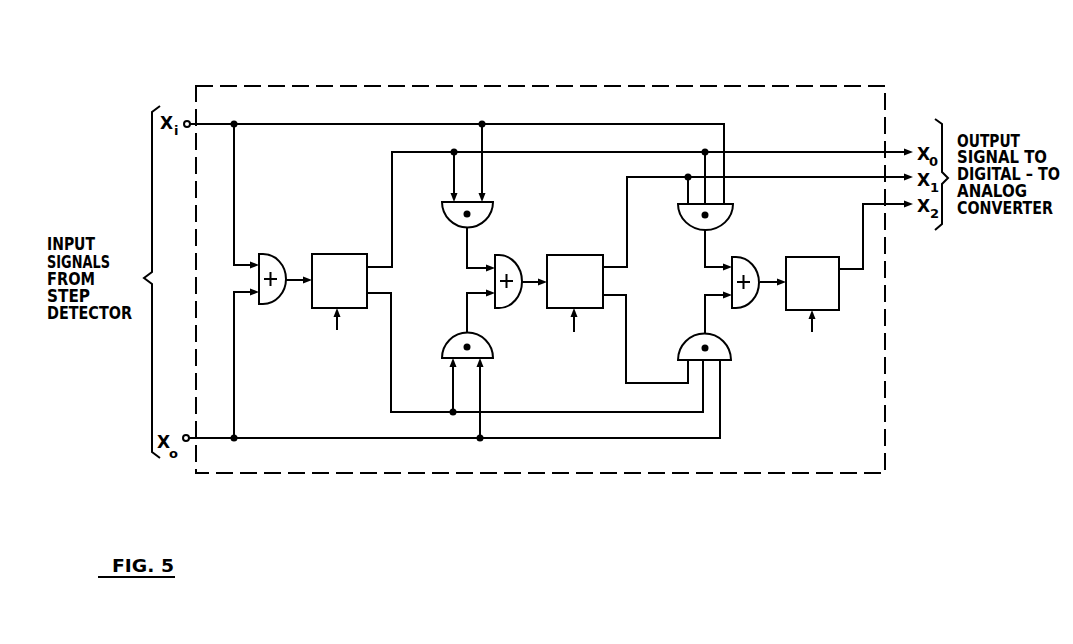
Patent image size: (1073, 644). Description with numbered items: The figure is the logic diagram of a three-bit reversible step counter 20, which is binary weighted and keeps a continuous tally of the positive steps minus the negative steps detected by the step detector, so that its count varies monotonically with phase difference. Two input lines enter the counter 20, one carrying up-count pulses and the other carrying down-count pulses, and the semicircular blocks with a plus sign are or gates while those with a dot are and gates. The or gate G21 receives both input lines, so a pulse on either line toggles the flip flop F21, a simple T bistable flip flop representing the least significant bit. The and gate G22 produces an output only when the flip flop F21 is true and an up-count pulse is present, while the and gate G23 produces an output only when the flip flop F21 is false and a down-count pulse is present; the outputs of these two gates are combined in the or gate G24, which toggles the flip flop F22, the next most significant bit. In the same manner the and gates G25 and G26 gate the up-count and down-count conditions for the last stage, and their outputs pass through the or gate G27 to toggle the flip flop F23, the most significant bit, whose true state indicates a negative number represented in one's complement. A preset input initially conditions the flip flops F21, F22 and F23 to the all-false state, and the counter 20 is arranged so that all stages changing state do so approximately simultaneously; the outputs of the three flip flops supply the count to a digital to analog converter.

The reversible step counter 20 is at (480, 509).
The or gate G21 is at (285, 267).
The flip flop F21 is at (612, 282).
The and gate G22 is at (477, 210).
The and gate G23 is at (476, 324).
The or gate G24 is at (521, 273).
The flip flop F22 is at (730, 279).
The and gate G25 is at (718, 210).
The and gate G26 is at (709, 326).
The or gate G27 is at (759, 273).
The flip flop F23 is at (849, 282).